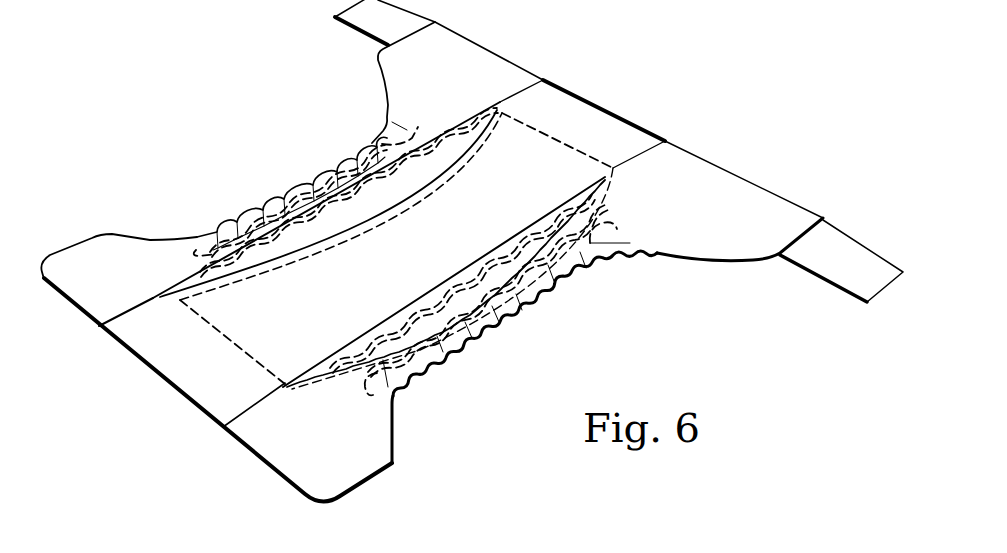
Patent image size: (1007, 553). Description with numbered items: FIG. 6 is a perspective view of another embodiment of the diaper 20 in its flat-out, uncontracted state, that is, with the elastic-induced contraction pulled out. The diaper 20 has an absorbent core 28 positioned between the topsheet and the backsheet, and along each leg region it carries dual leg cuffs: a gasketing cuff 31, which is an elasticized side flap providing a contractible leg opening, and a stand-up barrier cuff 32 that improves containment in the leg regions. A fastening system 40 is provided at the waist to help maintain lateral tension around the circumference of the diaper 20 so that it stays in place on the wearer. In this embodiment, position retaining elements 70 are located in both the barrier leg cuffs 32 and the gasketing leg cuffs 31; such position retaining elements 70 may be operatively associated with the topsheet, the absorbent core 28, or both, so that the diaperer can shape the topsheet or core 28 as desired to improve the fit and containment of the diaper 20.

The diaper 20 is at (678, 85).
The absorbent core 28 is at (233, 348).
The gasketing cuff 31 is at (330, 180).
The barrier cuff 32 is at (297, 237).
The fastening system 40 is at (836, 287).
The position retaining element 70 is at (220, 223).